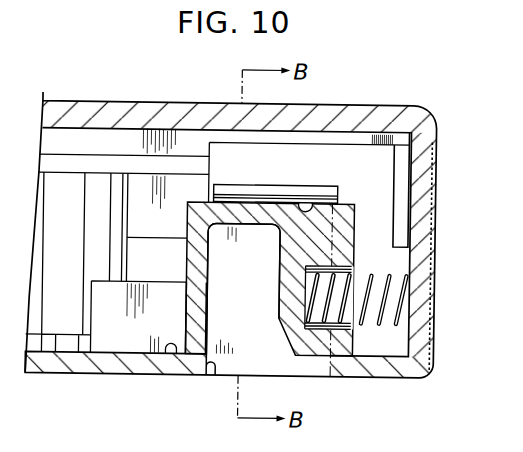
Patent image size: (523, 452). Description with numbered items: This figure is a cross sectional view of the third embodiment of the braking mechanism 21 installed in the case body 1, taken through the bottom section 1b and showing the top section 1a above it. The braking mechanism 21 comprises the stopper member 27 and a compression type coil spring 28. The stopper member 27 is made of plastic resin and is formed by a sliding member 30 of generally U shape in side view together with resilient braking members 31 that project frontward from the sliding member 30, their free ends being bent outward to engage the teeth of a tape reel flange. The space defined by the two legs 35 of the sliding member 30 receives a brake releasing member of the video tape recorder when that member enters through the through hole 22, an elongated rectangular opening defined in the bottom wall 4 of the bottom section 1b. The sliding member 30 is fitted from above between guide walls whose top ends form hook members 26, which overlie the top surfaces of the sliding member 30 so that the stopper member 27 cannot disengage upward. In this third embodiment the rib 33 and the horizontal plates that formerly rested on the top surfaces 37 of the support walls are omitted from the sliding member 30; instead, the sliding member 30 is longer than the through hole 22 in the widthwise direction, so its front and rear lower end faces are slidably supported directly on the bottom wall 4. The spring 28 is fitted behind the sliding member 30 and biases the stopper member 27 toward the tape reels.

The case body 1 is at (231, 231).
The top section 1a is at (393, 106).
The bottom section 1b is at (60, 370).
The bottom wall 4 is at (371, 367).
The braking mechanism 21 is at (368, 218).
The through hole 22 is at (213, 377).
The hook member 26 is at (310, 207).
The stopper member 27 is at (183, 226).
The coil spring 28 is at (388, 316).
The sliding member 30 is at (255, 212).
The resilient braking member 31 is at (162, 289).
The rib 33 is at (200, 300).
The leg 35 is at (278, 276).
The top surface 37 is at (166, 356).